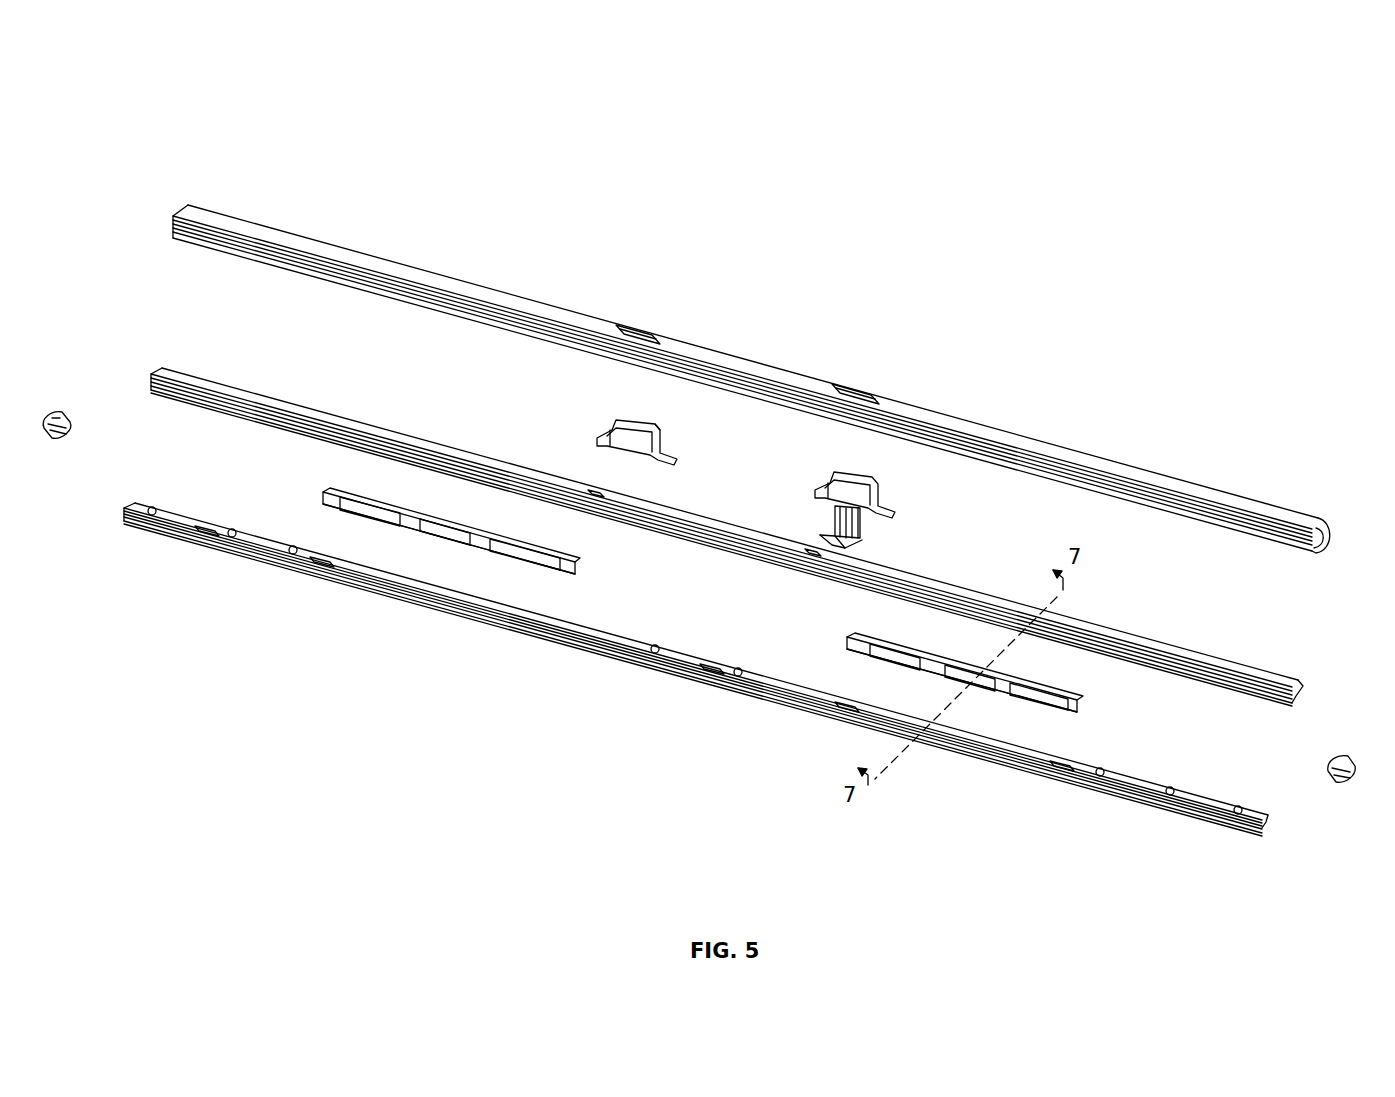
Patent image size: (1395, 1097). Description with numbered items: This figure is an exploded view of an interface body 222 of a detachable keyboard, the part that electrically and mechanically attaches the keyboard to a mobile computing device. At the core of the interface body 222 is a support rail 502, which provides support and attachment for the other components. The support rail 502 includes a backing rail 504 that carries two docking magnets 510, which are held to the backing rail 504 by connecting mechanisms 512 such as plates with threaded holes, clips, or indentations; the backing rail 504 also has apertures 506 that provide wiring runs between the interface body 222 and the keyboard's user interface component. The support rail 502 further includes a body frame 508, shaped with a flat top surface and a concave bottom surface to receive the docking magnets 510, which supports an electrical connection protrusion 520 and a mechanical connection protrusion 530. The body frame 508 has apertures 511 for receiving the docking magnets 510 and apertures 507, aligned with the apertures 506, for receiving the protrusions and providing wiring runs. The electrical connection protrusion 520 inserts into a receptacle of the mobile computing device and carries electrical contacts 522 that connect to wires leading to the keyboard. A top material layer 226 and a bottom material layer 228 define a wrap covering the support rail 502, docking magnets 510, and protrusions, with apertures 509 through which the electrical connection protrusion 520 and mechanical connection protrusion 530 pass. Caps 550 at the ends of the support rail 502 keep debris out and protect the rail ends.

The interface body 222 is at (146, 85).
The top material layer 226 is at (247, 227).
The bottom material layer 228 is at (256, 263).
The apertures 509 is at (660, 338).
The body frame 508 is at (1158, 644).
The apertures 511 is at (925, 580).
The apertures 507 is at (640, 505).
The mechanical connection protrusion 530 is at (600, 420).
The electrical connection protrusion 520 is at (820, 478).
The electrical contacts 522 is at (825, 522).
The docking magnets 510 is at (376, 496).
The connecting mechanisms 512 is at (320, 500).
The support rail 502 is at (1288, 700).
The backing rail 504 is at (375, 590).
The apertures 506 is at (600, 646).
The caps 550 is at (66, 410).